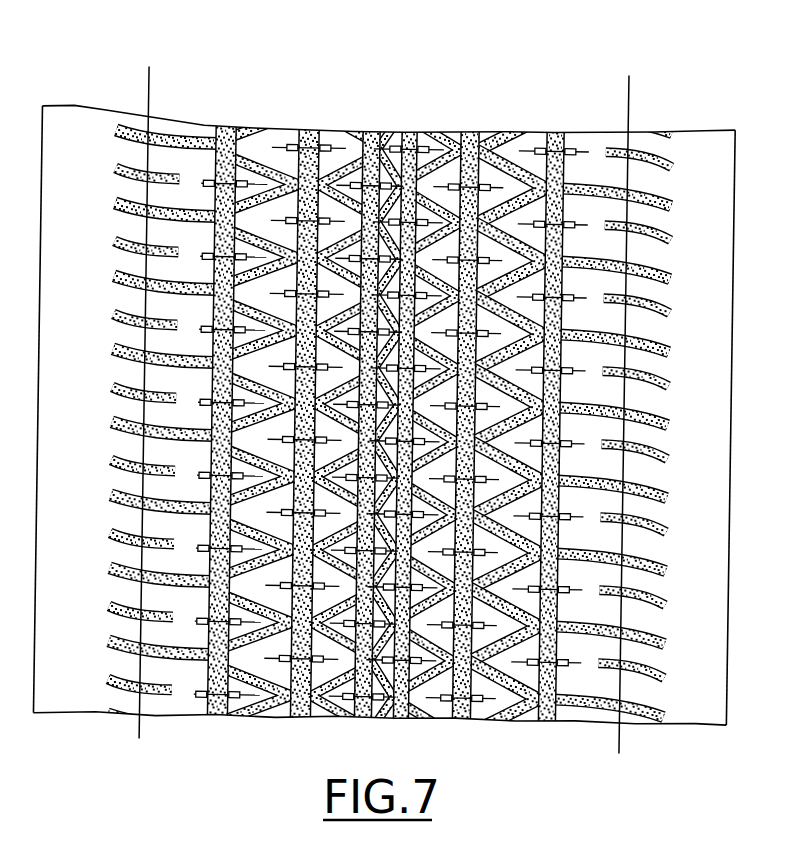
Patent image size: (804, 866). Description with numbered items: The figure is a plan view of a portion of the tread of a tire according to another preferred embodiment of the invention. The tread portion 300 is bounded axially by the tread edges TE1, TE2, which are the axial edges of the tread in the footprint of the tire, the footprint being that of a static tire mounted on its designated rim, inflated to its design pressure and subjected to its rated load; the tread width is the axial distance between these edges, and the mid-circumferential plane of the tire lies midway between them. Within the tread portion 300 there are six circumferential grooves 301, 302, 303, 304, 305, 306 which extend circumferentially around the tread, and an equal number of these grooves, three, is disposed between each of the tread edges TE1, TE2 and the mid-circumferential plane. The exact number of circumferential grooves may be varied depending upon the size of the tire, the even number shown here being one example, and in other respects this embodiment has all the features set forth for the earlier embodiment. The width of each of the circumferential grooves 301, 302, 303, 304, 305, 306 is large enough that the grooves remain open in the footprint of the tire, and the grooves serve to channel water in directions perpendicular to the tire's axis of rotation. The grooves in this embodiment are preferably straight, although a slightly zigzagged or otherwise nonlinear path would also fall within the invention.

The tread portion 300 is at (134, 100).
The circumferential groove 301 is at (228, 132).
The circumferential groove 302 is at (308, 132).
The circumferential groove 303 is at (371, 132).
The circumferential groove 304 is at (409, 132).
The circumferential groove 305 is at (469, 132).
The circumferential groove 306 is at (554, 132).
The tread edge TE1 is at (150, 88).
The tread edge TE2 is at (630, 100).